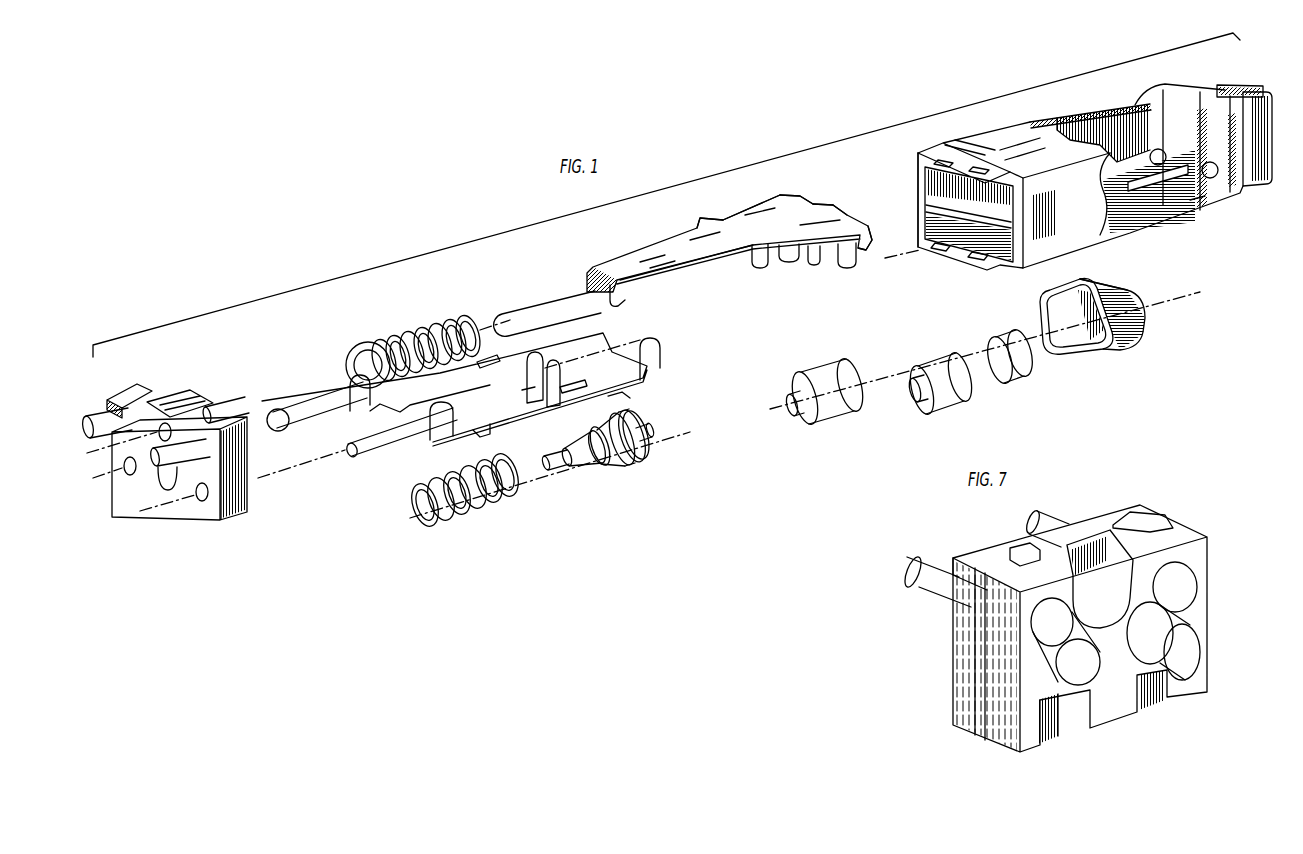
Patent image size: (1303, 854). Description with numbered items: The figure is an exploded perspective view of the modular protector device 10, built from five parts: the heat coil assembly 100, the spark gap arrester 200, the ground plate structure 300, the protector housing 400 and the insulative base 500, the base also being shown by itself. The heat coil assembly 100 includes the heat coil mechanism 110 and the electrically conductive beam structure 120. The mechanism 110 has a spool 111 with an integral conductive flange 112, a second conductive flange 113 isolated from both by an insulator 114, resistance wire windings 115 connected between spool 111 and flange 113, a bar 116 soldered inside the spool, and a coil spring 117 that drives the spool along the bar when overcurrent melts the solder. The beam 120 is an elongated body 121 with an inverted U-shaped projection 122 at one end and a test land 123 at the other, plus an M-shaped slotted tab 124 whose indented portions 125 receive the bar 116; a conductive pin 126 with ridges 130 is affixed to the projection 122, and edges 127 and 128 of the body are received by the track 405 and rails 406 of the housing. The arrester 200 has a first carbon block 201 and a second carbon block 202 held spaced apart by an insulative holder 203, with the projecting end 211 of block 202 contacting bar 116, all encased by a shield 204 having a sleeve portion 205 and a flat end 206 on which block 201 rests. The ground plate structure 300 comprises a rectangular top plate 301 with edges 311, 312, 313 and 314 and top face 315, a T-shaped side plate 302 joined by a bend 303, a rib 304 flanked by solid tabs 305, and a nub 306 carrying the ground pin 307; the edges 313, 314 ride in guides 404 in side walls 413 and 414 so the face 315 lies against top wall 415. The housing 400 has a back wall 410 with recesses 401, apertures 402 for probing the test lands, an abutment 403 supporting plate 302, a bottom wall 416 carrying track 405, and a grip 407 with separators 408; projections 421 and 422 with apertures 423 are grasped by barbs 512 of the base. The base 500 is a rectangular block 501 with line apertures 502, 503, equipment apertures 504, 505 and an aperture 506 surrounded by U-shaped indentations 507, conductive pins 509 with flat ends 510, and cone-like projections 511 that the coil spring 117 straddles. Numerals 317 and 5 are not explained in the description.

In FIG. 1, the protector device 10 is at (757, 468).
In FIG. 1, the heat coil assembly 100 is at (402, 326).
In FIG. 1, the heat coil mechanism 110 is at (590, 568).
In FIG. 1, the spool 111 is at (560, 472).
In FIG. 1, the conductive flange 112 is at (640, 456).
In FIG. 1, the conductive flange 113 is at (612, 477).
In FIG. 1, the insulator 114 is at (637, 470).
In FIG. 1, the windings 115 is at (590, 467).
In FIG. 1, the bar 116 is at (652, 437).
In FIG. 1, the coil spring 117 is at (492, 522).
In FIG. 1, the electrically conductive beam structure 120 is at (539, 455).
In FIG. 1, the elongated body 121 is at (480, 440).
In FIG. 1, the U-shaped transverse projection 122 is at (430, 440).
In FIG. 1, the test land 123 is at (663, 350).
In FIG. 1, the M-shaped slotted tab 124 is at (570, 372).
In FIG. 1, the indented portions 125 is at (522, 390).
In FIG. 1, the electrically conductive pin 126 is at (350, 458).
In FIG. 1, the edge 127 is at (598, 380).
In FIG. 1, the edge 128 is at (622, 385).
In FIG. 1, the ridges 130 is at (355, 412).
In FIG. 1, the spark gap arrester 200 is at (1020, 428).
In FIG. 1, the first carbon block 201 is at (990, 343).
In FIG. 1, the second carbon block 202 is at (936, 406).
In FIG. 1, the insulative holder 203 is at (932, 372).
In FIG. 1, the shield 204 is at (1093, 292).
In FIG. 1, the sleeve portion 205 is at (1135, 320).
In FIG. 1, the flat end 206 is at (1096, 348).
In FIG. 1, the projecting end 211 is at (912, 402).
In FIG. 1, the ground plate structure 300 is at (627, 249).
In FIG. 1, the top plate 301 is at (770, 208).
In FIG. 1, the side plate 302 is at (872, 260).
In FIG. 1, the bend 303 is at (825, 213).
In FIG. 1, the rib 304 is at (690, 275).
In FIG. 1, the solid tabs 305 is at (752, 266).
In FIG. 1, the nub 306 is at (610, 310).
In FIG. 1, the ground pin 307 is at (540, 320).
In FIG. 1, the edge 311 is at (786, 262).
In FIG. 1, the edge 312 is at (845, 223).
In FIG. 1, the edge 313 is at (712, 216).
In FIG. 1, the edge 314 is at (814, 268).
In FIG. 1, the top face 315 is at (800, 208).
In FIG. 1, the finger 317 is at (856, 270).
In FIG. 1, the protector housing 400 is at (1187, 281).
In FIG. 1, the recesses 401 is at (1197, 212).
In FIG. 1, the apertures 402 is at (1232, 200).
In FIG. 1, the abutment 403 is at (1160, 138).
In FIG. 1, the guides 404 is at (1100, 116).
In FIG. 1, the track 405 is at (1130, 228).
In FIG. 1, the rails 406 is at (1085, 252).
In FIG. 1, the grip 407 is at (1262, 128).
In FIG. 1, the separators 408 is at (1235, 84).
In FIG. 1, the back wall 410 is at (1190, 148).
In FIG. 1, the side wall 413 is at (1067, 126).
In FIG. 1, the side wall 414 is at (1030, 257).
In FIG. 1, the top wall 415 is at (1010, 140).
In FIG. 1, the bottom wall 416 is at (975, 268).
In FIG. 1, the first projection 421 is at (915, 156).
In FIG. 1, the second projection 422 is at (945, 265).
In FIG. 1, the apertures 423 is at (975, 160).
In FIG. 1, the section line 5 is at (1122, 97).
In FIG. 1, the insulative base 500 is at (222, 369).
In FIG. 7, the insulative base 500 is at (910, 694).
In FIG. 1, the rectangular block 501 is at (235, 525).
In FIG. 7, the rectangular block 501 is at (1005, 725).
In FIG. 1, the line aperture 502 is at (202, 502).
In FIG. 7, the line aperture 502 is at (1048, 702).
In FIG. 1, the line aperture 503 is at (125, 472).
In FIG. 7, the line aperture 503 is at (1155, 690).
In FIG. 1, the equipment aperture 504 is at (210, 418).
In FIG. 1, the equipment aperture 505 is at (116, 398).
In FIG. 1, the aperture 506 is at (160, 442).
In FIG. 7, the aperture 506 is at (1110, 598).
In FIG. 7, the U-shaped indentations 507 is at (1190, 670).
In FIG. 1, the conductive pins 509 is at (96, 424).
In FIG. 7, the conductive pins 509 is at (912, 560).
In FIG. 7, the flat ends 510 is at (1195, 583).
In FIG. 7, the cone-like projections 511 is at (1180, 638).
In FIG. 1, the barbs 512 is at (155, 400).
In FIG. 7, the barbs 512 is at (1015, 548).